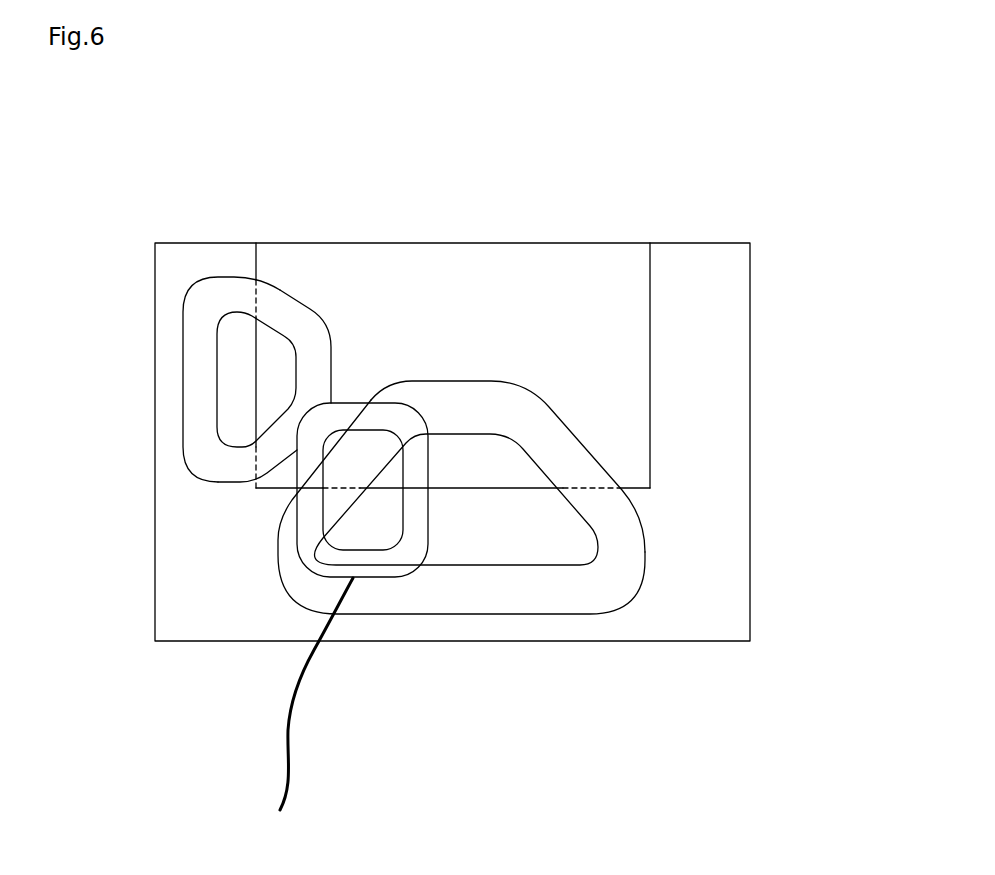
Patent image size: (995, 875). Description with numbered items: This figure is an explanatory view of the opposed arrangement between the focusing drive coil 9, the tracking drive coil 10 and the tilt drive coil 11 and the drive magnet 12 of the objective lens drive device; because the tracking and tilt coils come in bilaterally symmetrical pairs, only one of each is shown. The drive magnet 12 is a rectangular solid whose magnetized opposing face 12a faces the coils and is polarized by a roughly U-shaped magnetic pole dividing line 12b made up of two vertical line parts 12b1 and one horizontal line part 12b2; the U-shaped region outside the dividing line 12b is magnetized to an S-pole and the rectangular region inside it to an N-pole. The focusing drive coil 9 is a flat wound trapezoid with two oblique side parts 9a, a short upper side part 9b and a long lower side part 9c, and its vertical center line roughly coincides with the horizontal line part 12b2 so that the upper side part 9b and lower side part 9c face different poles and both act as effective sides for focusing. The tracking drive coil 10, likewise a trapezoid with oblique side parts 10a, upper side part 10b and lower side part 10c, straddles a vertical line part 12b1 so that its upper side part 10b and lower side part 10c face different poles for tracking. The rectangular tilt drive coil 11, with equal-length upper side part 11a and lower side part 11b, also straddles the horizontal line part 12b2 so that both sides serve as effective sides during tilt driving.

The focusing drive coil 9 is at (443, 447).
The oblique side part 9a is at (352, 463).
The upper side part 9b is at (480, 407).
The lower side part 9c is at (420, 592).
The tracking drive coil 10 is at (244, 392).
The oblique side part 10a is at (278, 452).
The upper side part 10b is at (308, 366).
The lower side part 10c is at (203, 430).
The tilt drive coil 11 is at (369, 495).
The upper side part 11a is at (348, 408).
The lower side part 11b is at (310, 719).
The drive magnet 12 is at (451, 464).
The magnetized opposing face 12a is at (702, 403).
The magnetic pole dividing line 12b is at (451, 464).
The vertical line part 12b1 is at (650, 342).
The horizontal line part 12b2 is at (523, 490).